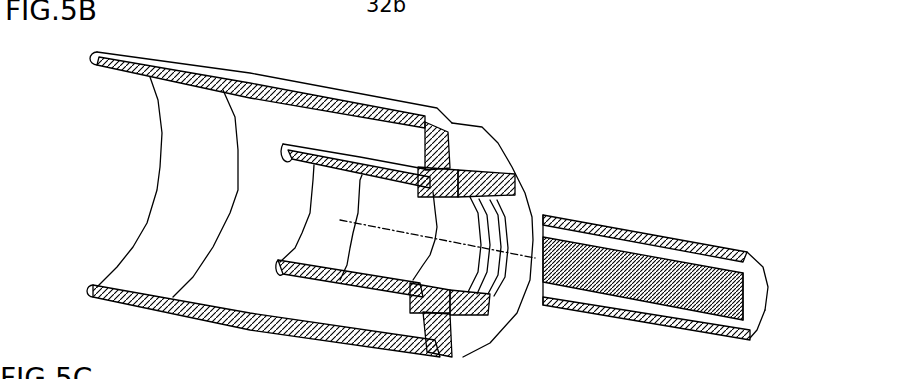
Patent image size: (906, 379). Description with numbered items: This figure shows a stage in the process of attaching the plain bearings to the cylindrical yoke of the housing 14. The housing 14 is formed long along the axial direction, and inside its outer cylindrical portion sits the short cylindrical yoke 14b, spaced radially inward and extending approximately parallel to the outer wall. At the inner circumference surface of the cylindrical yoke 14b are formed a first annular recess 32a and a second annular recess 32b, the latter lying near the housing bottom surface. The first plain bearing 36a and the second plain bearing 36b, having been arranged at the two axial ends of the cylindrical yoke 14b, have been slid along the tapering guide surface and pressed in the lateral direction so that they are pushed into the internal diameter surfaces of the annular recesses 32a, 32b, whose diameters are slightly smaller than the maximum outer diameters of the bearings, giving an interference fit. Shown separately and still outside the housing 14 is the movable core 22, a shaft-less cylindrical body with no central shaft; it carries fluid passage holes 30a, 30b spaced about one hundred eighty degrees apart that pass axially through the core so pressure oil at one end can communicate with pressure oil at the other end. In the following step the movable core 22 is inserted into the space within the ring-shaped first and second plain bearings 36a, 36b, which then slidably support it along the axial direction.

The housing 14 is at (312, 204).
The cylindrical yoke 14b is at (263, 234).
The movable core 22 is at (646, 286).
The fluid passage hole 30a is at (782, 270).
The fluid passage hole 30b is at (770, 322).
The annular recess 32a is at (352, 313).
The annular recess 32b is at (355, 261).
The first plain bearing 36a is at (305, 216).
The second plain bearing 36b is at (517, 235).